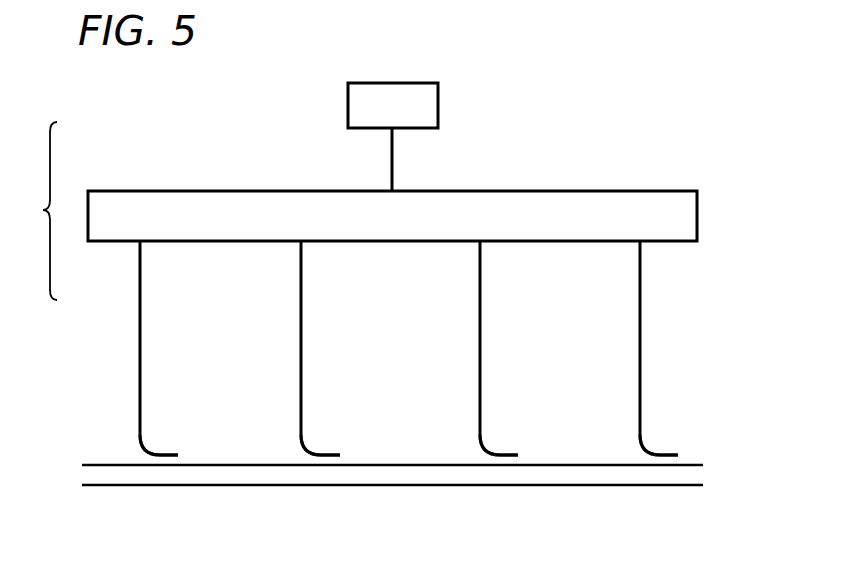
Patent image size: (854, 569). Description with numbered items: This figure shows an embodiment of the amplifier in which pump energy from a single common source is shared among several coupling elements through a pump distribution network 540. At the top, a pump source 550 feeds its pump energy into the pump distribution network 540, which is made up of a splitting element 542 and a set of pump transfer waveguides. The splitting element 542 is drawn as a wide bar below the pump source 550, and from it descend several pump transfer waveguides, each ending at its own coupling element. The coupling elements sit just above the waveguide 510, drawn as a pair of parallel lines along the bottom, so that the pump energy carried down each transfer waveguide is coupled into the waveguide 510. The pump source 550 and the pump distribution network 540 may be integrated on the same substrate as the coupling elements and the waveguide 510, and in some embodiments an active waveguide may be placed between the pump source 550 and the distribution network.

The waveguide 510 is at (582, 488).
The pump distribution network 540 is at (32, 211).
The splitting element 542 is at (697, 222).
The pump source 550 is at (438, 103).